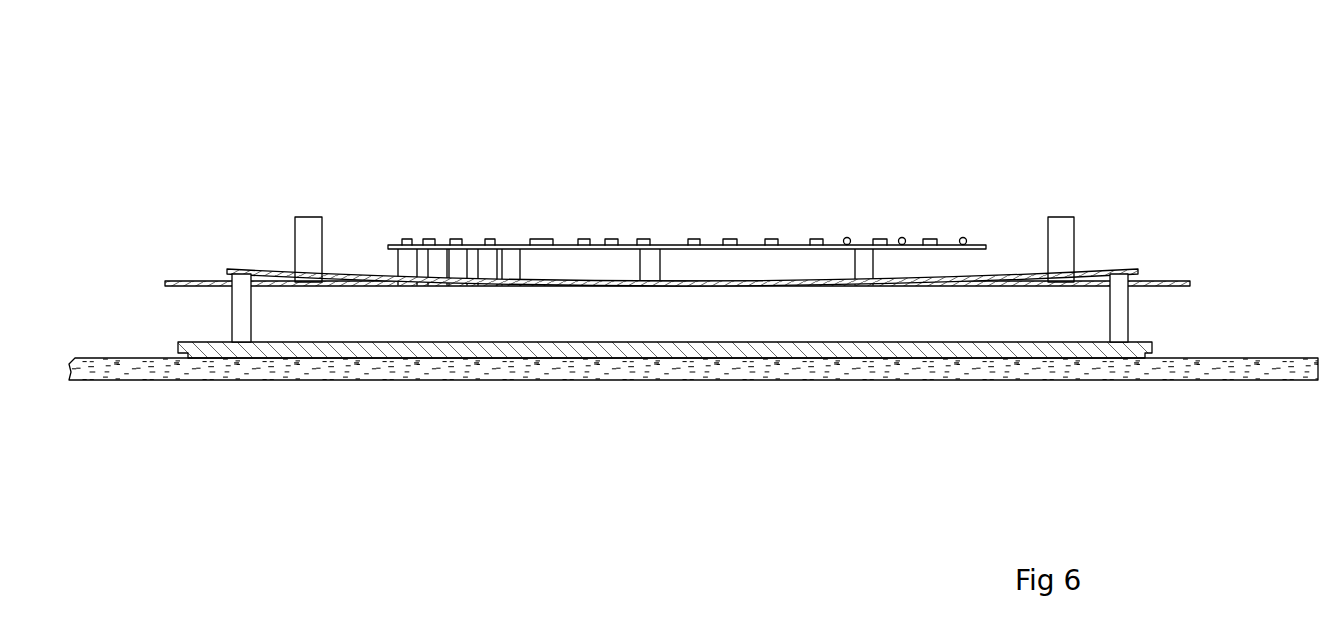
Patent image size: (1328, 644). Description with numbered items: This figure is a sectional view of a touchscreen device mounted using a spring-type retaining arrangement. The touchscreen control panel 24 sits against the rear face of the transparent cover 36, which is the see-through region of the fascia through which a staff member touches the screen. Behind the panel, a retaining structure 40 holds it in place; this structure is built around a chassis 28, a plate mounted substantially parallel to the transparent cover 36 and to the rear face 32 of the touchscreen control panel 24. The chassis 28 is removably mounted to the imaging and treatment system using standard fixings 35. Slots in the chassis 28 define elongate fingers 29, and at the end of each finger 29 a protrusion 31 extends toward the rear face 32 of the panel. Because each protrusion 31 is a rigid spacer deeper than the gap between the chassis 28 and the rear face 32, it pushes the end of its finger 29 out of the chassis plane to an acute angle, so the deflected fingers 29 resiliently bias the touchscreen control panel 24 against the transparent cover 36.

The touchscreen control panel 24 is at (942, 358).
The chassis 28 is at (1165, 280).
The elongate fingers 29 is at (265, 270).
The protrusion 31 is at (1128, 316).
The rear face of the touchscreen control panel 32 is at (990, 342).
The standard fixings 35 is at (322, 242).
The transparent cover 36 is at (628, 380).
The retaining structure 40 is at (1004, 262).